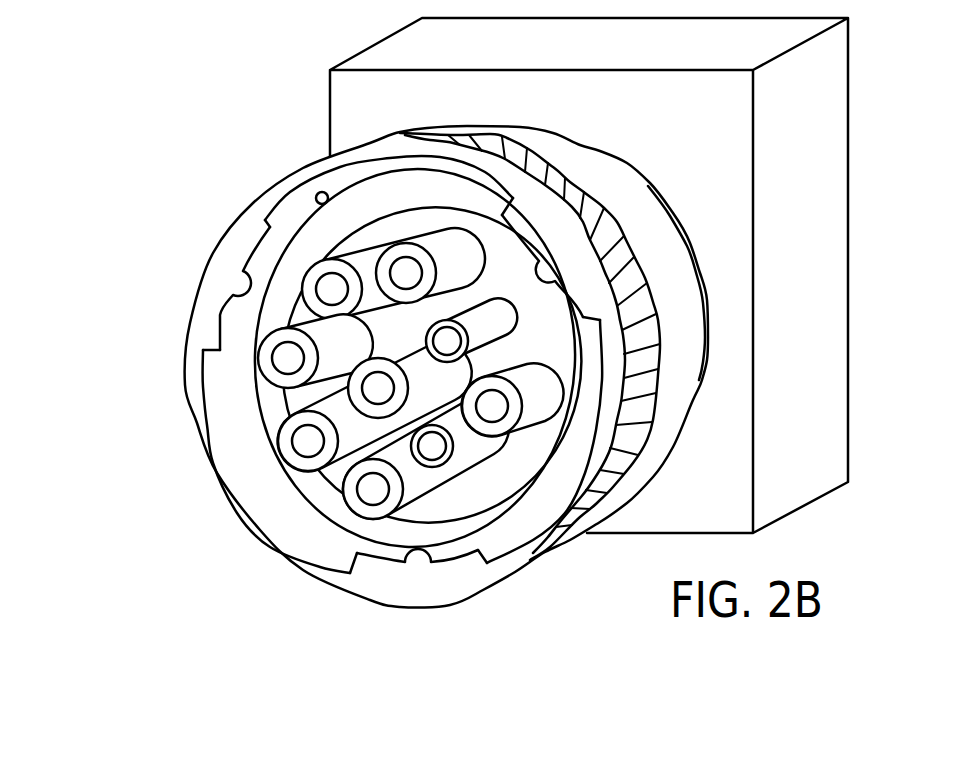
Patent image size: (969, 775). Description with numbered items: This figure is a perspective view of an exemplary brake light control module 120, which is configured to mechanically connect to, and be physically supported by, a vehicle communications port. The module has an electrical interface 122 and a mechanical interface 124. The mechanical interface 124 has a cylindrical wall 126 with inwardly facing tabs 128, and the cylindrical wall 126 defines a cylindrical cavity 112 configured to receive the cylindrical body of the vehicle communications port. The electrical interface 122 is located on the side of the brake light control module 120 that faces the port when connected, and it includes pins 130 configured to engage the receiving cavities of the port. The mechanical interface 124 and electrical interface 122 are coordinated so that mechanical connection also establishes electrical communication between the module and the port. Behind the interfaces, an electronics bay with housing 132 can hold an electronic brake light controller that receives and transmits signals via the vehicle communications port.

The cylindrical cavity 112 is at (440, 198).
The brake light control module 120 is at (382, 377).
The electrical interface 122 is at (288, 502).
The mechanical interface 124 is at (187, 412).
The cylindrical wall 126 is at (303, 168).
The inwardly facing tabs 128 is at (565, 258).
The pins 130 is at (533, 375).
The housing 132 is at (790, 195).